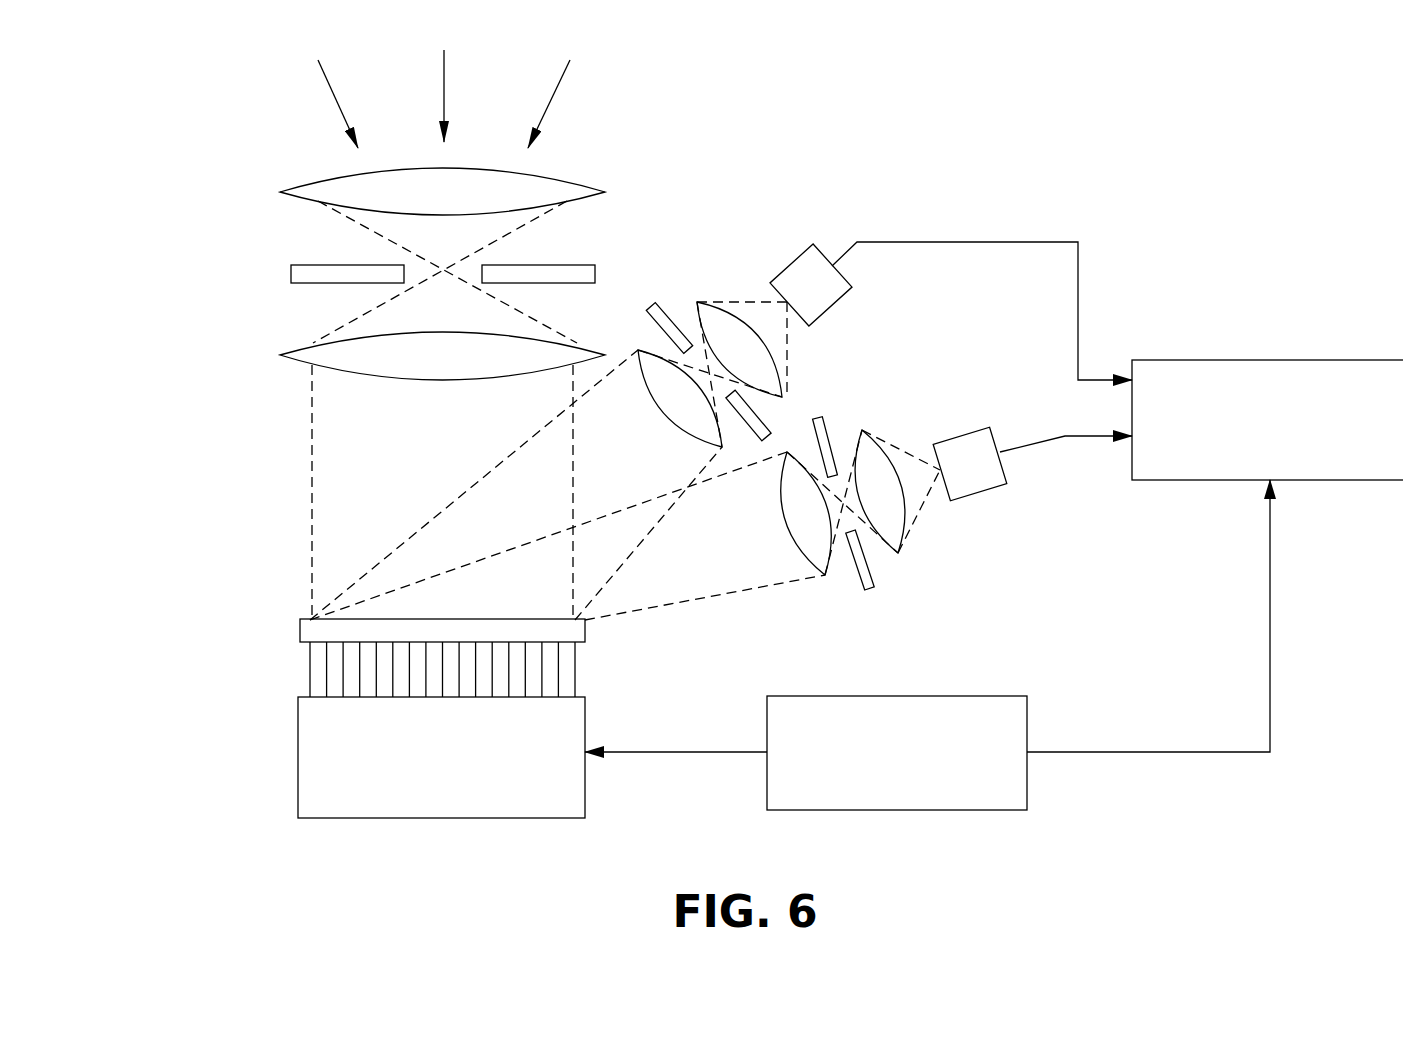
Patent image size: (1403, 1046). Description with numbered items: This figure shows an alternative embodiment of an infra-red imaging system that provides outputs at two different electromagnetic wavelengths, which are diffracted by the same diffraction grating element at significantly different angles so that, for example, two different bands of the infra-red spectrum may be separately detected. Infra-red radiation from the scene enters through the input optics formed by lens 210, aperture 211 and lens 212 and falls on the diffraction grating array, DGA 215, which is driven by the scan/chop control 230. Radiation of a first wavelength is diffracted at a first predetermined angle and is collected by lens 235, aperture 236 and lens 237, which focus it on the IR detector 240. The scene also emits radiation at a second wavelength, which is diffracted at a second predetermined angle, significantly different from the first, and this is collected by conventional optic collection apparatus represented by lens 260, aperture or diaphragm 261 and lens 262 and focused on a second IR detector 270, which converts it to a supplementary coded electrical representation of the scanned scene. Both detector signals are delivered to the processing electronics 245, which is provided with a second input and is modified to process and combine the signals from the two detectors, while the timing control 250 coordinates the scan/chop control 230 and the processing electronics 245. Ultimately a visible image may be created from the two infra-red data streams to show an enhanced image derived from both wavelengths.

The lens 210 is at (569, 178).
The aperture 211 is at (577, 265).
The lens 212 is at (586, 353).
The DGA 215 is at (296, 633).
The scan/chop control 230 is at (430, 818).
The lens 235 is at (808, 557).
The aperture 236 is at (870, 573).
The lens 237 is at (902, 513).
The IR detector 240 is at (968, 428).
The processing electronics 245 is at (1273, 360).
The timing control 250 is at (957, 695).
The lens 260 is at (677, 418).
The aperture or diaphragm 261 is at (767, 425).
The lens 262 is at (780, 372).
The IR detector 270 is at (817, 250).